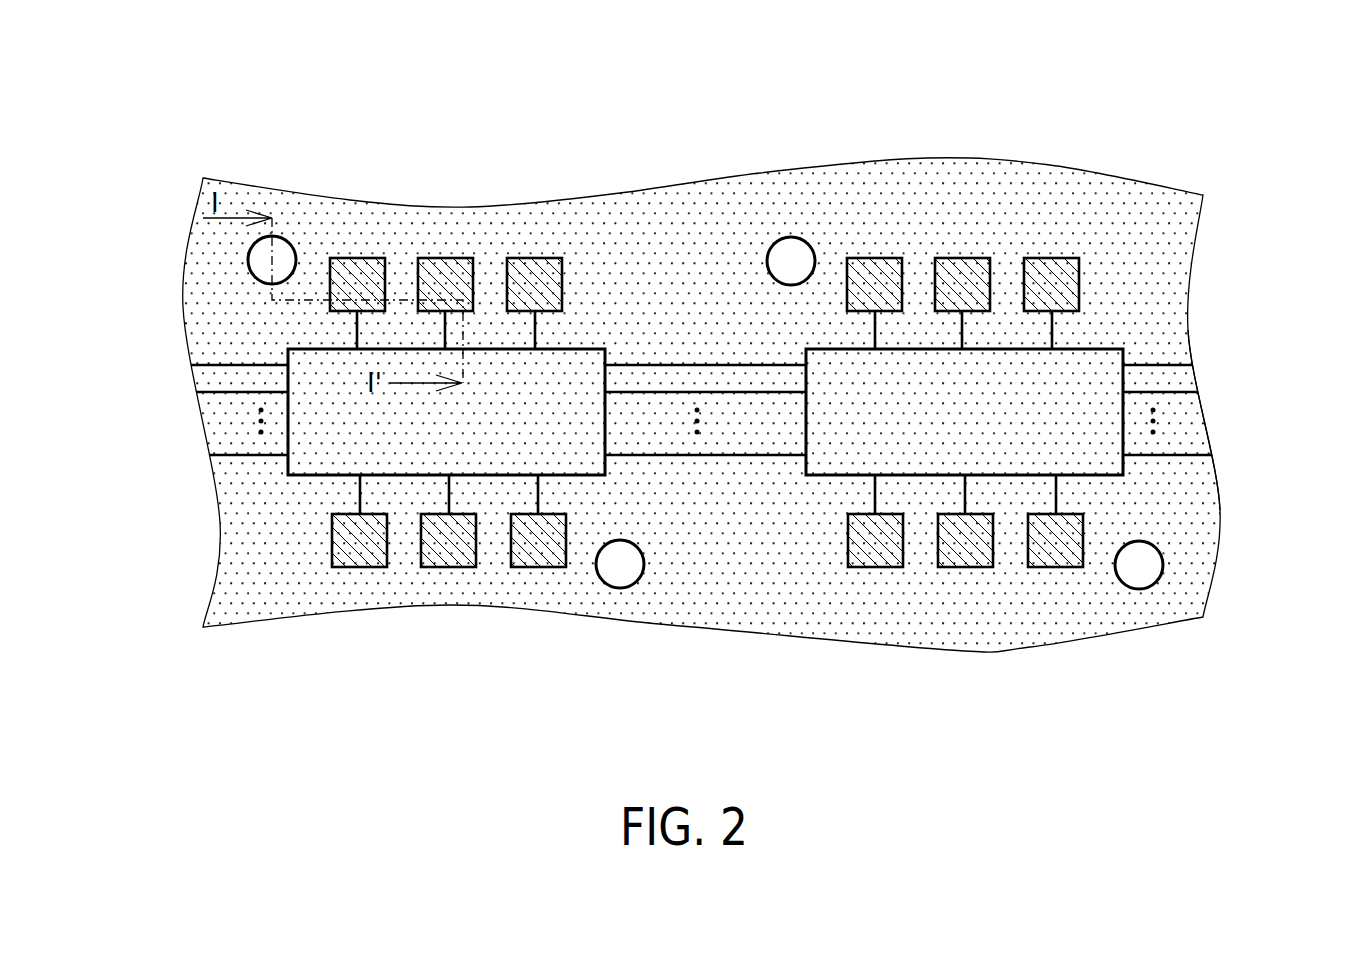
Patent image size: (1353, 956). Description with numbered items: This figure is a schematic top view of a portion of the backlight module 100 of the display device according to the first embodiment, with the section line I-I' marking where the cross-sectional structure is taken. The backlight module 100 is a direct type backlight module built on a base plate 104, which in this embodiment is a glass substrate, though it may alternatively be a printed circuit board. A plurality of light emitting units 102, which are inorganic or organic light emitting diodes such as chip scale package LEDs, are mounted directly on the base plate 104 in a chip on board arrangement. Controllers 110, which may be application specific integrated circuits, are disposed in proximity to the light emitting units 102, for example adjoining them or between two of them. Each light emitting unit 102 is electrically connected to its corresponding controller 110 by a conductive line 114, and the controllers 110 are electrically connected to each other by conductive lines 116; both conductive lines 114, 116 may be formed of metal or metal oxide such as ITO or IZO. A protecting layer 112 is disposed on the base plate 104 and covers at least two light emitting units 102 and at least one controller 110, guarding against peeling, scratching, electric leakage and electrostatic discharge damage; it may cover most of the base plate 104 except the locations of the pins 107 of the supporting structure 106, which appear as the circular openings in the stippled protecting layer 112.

The backlight module 100 is at (1115, 100).
The light emitting unit 102 is at (530, 266).
The base plate 104 is at (1192, 240).
The supporting structure 106 is at (294, 240).
The pin 107 is at (703, 351).
The controller 110 is at (577, 378).
The protecting layer 112 is at (1155, 292).
The conductive line 114 is at (536, 328).
The conductive line 116 is at (708, 364).